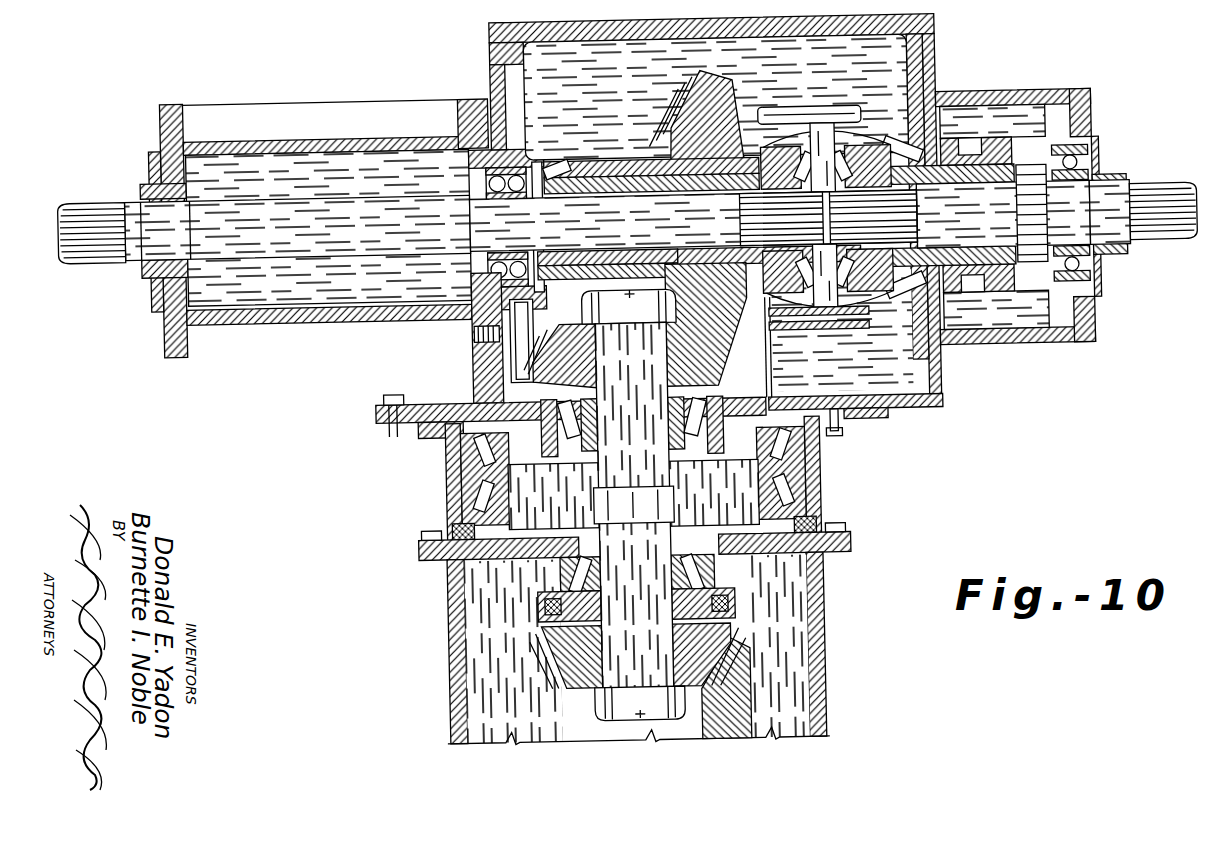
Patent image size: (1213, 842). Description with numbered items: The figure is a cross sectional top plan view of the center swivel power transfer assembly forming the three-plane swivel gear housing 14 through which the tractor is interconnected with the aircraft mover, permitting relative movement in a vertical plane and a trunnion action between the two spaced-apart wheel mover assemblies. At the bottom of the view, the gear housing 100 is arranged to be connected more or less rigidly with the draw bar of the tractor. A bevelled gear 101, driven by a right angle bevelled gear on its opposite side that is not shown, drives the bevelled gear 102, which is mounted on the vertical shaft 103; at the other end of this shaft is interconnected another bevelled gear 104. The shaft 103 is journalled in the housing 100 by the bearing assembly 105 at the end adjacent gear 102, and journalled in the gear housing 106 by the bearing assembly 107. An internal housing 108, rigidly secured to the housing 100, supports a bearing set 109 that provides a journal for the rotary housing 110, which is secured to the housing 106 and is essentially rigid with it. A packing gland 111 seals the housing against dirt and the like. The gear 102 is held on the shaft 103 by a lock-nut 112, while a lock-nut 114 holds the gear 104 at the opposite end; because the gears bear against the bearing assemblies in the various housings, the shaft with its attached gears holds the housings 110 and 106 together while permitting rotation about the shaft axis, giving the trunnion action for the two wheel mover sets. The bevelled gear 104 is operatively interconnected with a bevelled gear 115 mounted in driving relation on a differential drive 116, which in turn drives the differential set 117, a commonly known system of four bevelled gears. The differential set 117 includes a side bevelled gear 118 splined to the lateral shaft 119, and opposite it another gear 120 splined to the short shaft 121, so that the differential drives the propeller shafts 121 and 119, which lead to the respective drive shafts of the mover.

The swivel gear housing 14 is at (945, 52).
The gear housing 100 is at (828, 684).
The bevelled gear 101 is at (742, 662).
The bevelled gear 102 is at (575, 652).
The shaft 103 is at (648, 583).
The bevelled gear 104 is at (722, 384).
The bearing assembly 105 is at (710, 568).
The gear housing 106 is at (936, 412).
The bearing assembly 107 is at (705, 405).
The internal housing 108 is at (745, 485).
The bearing set 109 is at (805, 480).
The rotary housing 110 is at (445, 478).
The packing gland 111 is at (450, 522).
The lock-nut 112 is at (598, 700).
The lock-nut 114 is at (583, 308).
The bevelled gear 115 is at (666, 136).
The differential drive 116 is at (812, 128).
The differential drive 117 is at (856, 152).
The side bevelled gear 118 is at (758, 250).
The lateral shaft 119 is at (620, 225).
The gear 120 is at (882, 292).
The short shaft 121 is at (990, 232).